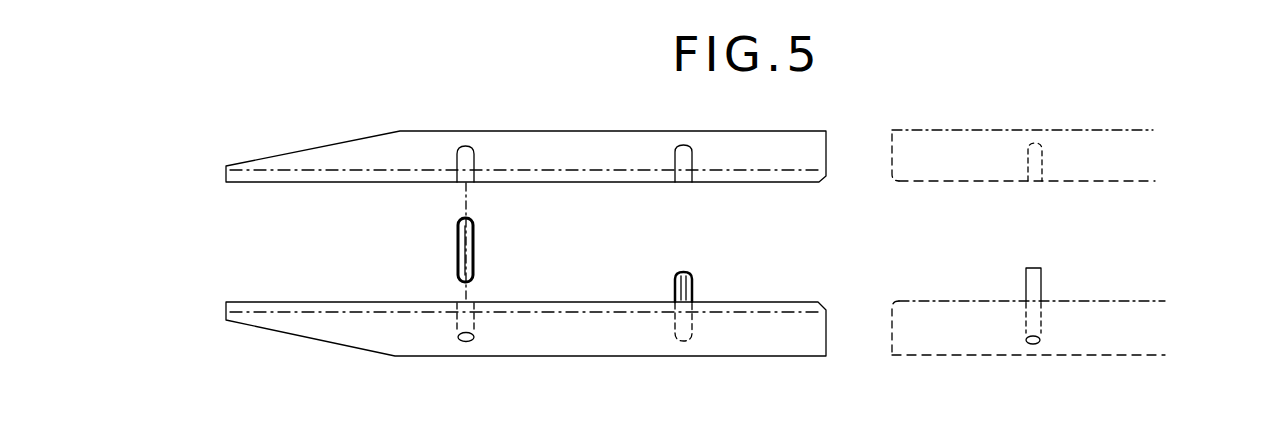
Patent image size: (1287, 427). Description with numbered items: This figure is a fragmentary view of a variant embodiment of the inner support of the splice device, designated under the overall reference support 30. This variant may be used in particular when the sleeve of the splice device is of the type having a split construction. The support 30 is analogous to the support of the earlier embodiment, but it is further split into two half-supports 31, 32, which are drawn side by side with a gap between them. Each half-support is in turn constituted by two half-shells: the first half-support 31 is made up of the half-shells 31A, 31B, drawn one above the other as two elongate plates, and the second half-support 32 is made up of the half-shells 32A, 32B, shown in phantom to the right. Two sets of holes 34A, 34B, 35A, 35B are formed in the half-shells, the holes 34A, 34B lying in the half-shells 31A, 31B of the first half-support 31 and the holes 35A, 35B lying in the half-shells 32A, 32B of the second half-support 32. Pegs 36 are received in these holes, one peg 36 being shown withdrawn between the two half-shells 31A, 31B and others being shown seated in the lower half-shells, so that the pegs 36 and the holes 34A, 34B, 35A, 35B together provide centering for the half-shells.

The support 30 is at (908, 113).
The half-support 31 is at (268, 247).
The half-shell 31A is at (572, 147).
The half-shell 31B is at (578, 337).
The half-support 32 is at (938, 247).
The half-shell 32A is at (1106, 148).
The half-shell 32B is at (1132, 333).
The hole 34A is at (466, 146).
The hole 34B is at (466, 343).
The hole 35A is at (1036, 147).
The hole 35B is at (1036, 345).
The peg 36 is at (474, 252).